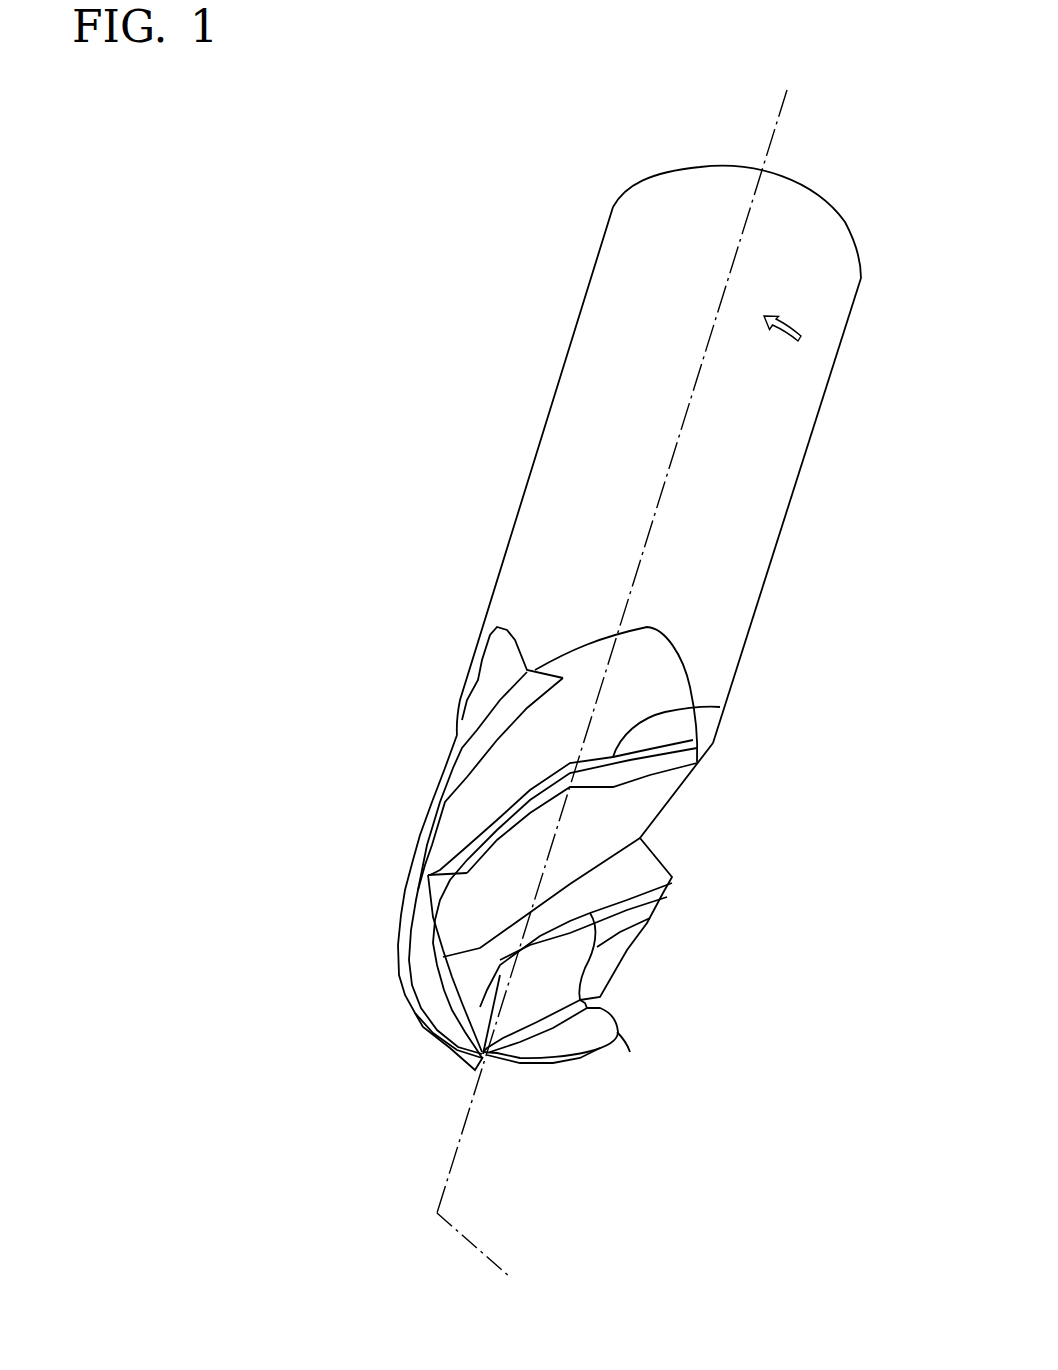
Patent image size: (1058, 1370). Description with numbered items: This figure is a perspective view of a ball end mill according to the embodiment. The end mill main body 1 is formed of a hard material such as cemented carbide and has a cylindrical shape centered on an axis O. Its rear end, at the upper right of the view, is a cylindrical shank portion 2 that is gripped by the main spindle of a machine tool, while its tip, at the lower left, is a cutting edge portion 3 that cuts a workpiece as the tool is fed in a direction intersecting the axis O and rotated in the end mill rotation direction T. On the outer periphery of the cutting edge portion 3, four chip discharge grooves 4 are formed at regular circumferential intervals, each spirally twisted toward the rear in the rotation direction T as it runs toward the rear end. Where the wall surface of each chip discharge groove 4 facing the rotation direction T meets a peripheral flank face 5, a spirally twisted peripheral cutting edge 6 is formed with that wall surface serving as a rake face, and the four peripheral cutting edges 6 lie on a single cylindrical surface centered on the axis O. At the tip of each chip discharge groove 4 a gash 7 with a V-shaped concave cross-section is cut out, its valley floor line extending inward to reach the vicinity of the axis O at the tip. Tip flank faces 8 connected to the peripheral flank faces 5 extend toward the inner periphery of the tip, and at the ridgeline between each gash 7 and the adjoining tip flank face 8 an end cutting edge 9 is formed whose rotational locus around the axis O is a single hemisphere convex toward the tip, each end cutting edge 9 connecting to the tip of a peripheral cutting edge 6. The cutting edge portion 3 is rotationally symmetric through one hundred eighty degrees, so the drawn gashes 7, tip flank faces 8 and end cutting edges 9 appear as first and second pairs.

The end mill main body 1 is at (333, 500).
The shank portion 2 is at (490, 491).
The cutting edge portion 3 is at (397, 680).
The chip discharge groove 4 is at (442, 725).
The peripheral flank face 5 is at (490, 700).
The peripheral cutting edge 6 is at (428, 800).
The gash 7 is at (487, 970).
The tip flank face 8 is at (406, 1001).
The end cutting edge 9 is at (510, 997).
The axis O is at (489, 1256).
The end mill rotation direction T is at (785, 316).